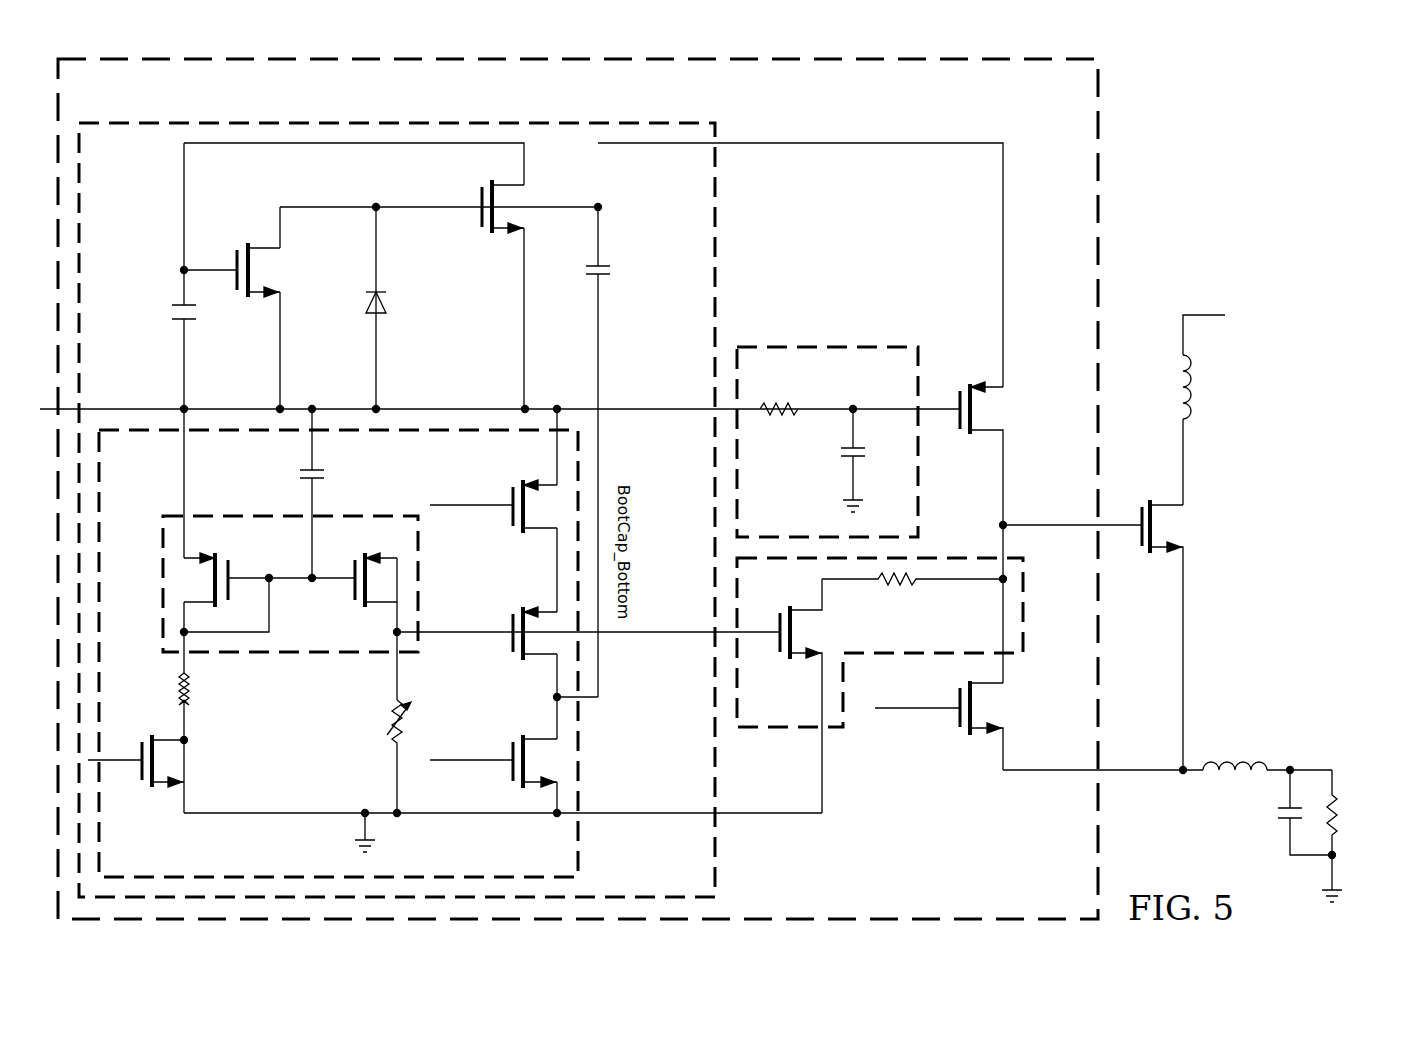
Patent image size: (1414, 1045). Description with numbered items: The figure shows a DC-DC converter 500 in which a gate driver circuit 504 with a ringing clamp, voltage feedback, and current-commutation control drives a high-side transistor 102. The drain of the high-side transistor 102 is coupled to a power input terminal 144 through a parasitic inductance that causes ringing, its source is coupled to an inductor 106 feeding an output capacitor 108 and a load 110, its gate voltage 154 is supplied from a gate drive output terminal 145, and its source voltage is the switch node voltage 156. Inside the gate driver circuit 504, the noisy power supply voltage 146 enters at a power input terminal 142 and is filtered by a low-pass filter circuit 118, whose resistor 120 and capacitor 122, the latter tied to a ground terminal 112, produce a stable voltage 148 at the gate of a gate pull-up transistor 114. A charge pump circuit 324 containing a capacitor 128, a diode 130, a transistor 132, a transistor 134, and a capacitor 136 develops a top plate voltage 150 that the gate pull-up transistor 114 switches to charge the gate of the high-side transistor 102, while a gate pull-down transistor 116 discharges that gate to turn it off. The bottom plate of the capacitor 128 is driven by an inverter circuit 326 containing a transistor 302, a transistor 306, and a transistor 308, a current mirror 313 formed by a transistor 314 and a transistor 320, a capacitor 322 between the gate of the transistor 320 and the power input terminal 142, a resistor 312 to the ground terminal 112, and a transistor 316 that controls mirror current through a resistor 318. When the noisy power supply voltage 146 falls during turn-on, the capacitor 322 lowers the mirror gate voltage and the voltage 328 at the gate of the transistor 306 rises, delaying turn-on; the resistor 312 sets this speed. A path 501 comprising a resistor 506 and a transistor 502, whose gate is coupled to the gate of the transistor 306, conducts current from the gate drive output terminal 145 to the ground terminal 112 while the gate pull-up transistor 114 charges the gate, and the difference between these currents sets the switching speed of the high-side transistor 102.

The DC-DC converter 500 is at (1268, 126).
The gate driver circuit 504 is at (1100, 160).
The bootstrap circuit 324 is at (314, 124).
The inverter circuit 326 is at (580, 760).
The current mirror 313 is at (154, 574).
The low-pass filter circuit 118 is at (864, 348).
The path 501 is at (797, 736).
The power input terminal 142 is at (122, 409).
The noisy power supply voltage 146 is at (657, 410).
The capacitor 136 is at (172, 318).
The transistor 132 is at (234, 254).
The transistor 134 is at (482, 202).
The diode 130 is at (386, 300).
The capacitor 128 is at (610, 272).
The top plate voltage 150 is at (800, 144).
The resistor 120 is at (780, 402).
The stable voltage 148 is at (870, 412).
The capacitor 122 is at (841, 452).
The ground terminal 112 is at (843, 506).
The gate pull-up transistor 114 is at (958, 392).
The gate drive output terminal 145 is at (998, 522).
The gate voltage 154 is at (1044, 528).
The resistor 506 is at (888, 586).
The transistor 502 is at (772, 656).
The gate pull-down transistor 116 is at (958, 724).
The power input terminal 144 is at (1205, 314).
The high-side transistor 102 is at (1132, 548).
The switch node voltage 156 is at (1180, 768).
The inductor 106 is at (1244, 760).
The output capacitor 108 is at (1278, 814).
The load 110 is at (1337, 816).
The capacitor 322 is at (300, 478).
The transistor 320 is at (228, 578).
The transistor 314 is at (350, 592).
The voltage 328 is at (390, 634).
The resistor 318 is at (188, 694).
The resistor 312 is at (392, 724).
The transistor 316 is at (140, 786).
The transistor 302 is at (512, 516).
The transistor 306 is at (512, 644).
The transistor 308 is at (512, 770).